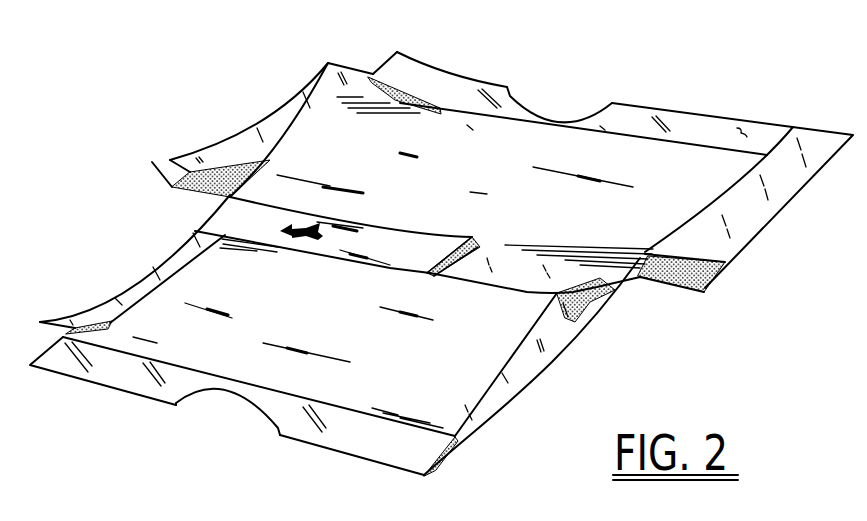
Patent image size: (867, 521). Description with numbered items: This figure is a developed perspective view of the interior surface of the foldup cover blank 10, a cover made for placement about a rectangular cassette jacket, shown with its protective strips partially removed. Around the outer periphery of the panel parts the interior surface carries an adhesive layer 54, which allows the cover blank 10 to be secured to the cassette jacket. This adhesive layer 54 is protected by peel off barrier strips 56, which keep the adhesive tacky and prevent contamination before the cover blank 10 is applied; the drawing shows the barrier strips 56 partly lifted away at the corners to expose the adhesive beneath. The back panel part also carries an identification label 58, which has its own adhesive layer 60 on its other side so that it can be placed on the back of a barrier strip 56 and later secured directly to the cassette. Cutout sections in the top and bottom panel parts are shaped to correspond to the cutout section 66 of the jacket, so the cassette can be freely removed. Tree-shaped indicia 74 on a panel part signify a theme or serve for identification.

The foldup cover blank 10 is at (675, 79).
The adhesive layer 54 is at (366, 77).
The peel off barrier strips 56 is at (278, 107).
The identification label 58 is at (235, 224).
The adhesive layer 60 is at (470, 240).
The cutout section 66 is at (540, 117).
The indicia 74 is at (313, 243).